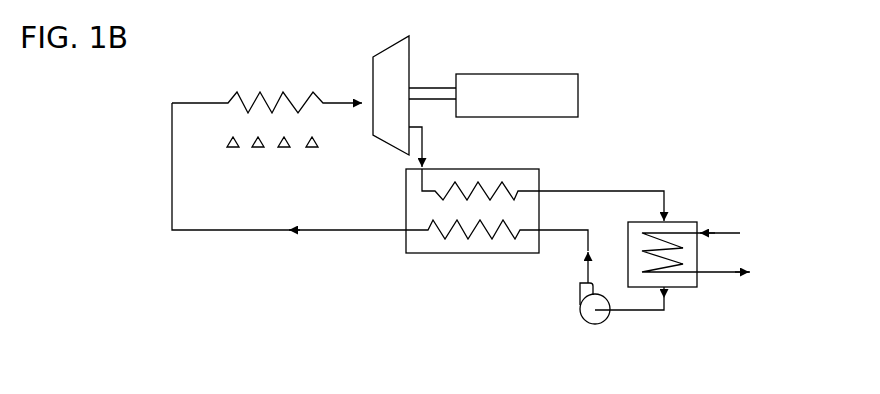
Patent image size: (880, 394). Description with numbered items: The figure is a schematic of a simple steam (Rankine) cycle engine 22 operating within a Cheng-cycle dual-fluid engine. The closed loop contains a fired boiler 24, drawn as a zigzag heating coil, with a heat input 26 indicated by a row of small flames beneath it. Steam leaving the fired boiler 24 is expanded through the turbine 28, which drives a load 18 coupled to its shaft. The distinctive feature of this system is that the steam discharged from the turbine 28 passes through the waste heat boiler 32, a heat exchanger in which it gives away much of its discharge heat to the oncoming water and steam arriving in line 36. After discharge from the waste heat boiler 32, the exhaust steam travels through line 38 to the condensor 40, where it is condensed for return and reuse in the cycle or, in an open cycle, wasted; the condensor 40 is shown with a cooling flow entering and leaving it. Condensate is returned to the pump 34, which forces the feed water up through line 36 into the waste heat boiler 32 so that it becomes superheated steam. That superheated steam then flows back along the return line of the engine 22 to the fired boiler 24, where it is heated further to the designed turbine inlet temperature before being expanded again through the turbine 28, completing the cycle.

The load 18 is at (578, 95).
The steam cycle engine 22 is at (134, 243).
The fired boiler 24 is at (267, 94).
The heat input 26 is at (283, 141).
The turbine 28 is at (392, 47).
The waste heat boiler 32 is at (487, 169).
The pump 34 is at (596, 325).
The line 36 is at (566, 234).
The line 38 is at (597, 191).
The condensor 40 is at (686, 287).